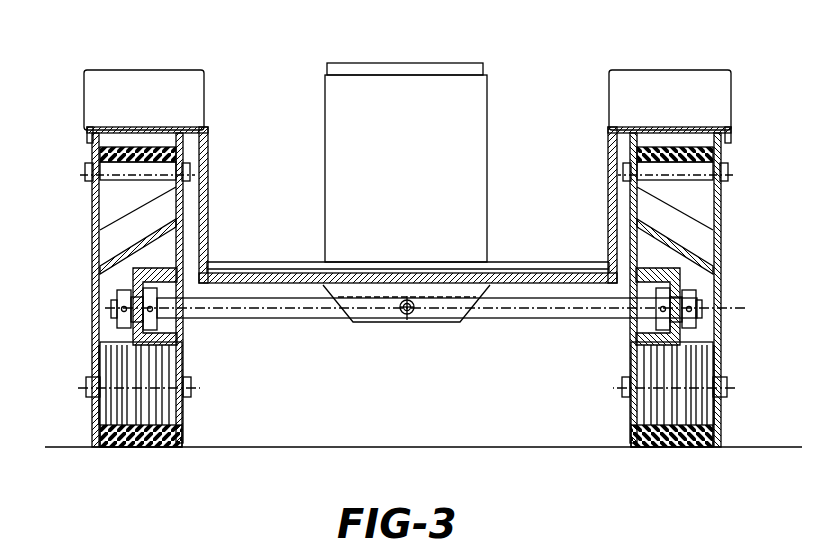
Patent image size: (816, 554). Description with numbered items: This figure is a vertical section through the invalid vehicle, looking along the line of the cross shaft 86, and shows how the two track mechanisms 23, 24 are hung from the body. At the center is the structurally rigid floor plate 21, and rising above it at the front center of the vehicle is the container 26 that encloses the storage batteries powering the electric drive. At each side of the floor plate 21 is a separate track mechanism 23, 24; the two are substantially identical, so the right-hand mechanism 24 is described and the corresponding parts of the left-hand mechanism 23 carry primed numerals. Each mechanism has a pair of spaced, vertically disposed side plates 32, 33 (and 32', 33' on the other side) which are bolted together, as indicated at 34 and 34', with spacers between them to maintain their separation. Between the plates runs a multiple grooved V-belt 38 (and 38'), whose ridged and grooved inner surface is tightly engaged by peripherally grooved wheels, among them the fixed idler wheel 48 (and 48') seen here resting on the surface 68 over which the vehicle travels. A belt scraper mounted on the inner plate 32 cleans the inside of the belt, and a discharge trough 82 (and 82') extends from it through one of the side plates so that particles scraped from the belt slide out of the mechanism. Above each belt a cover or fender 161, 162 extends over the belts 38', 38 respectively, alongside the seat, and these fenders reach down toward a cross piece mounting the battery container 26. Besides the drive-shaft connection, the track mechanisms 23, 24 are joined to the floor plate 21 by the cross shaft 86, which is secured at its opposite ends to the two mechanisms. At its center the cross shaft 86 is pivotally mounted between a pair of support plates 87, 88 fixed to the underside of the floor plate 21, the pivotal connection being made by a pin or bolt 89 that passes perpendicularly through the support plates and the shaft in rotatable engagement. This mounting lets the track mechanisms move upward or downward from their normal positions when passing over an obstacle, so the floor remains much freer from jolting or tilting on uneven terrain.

The fender 161 is at (158, 48).
The fender 162 is at (680, 74).
The battery container 26 is at (426, 78).
The floor plate 21 is at (268, 272).
The track mechanism 23 is at (92, 283).
The track mechanism 24 is at (726, 298).
The side plate 32 is at (640, 290).
The side plate 32' is at (162, 290).
The side plate 33 is at (705, 264).
The side plate 33' is at (104, 213).
The bolt 34 is at (694, 176).
The bolt 34' is at (113, 177).
The V-belt 38 is at (699, 141).
The V-belt 38' is at (138, 319).
The discharge trough 82 is at (704, 233).
The discharge trough 82' is at (114, 246).
The cross shaft 86 is at (496, 313).
The support plate 87 is at (669, 306).
The support plate 88 is at (343, 310).
The pin or bolt 89 is at (406, 314).
The fixed idler wheel 48 is at (690, 394).
The fixed idler wheel 48' is at (122, 394).
The surface 68 is at (376, 447).